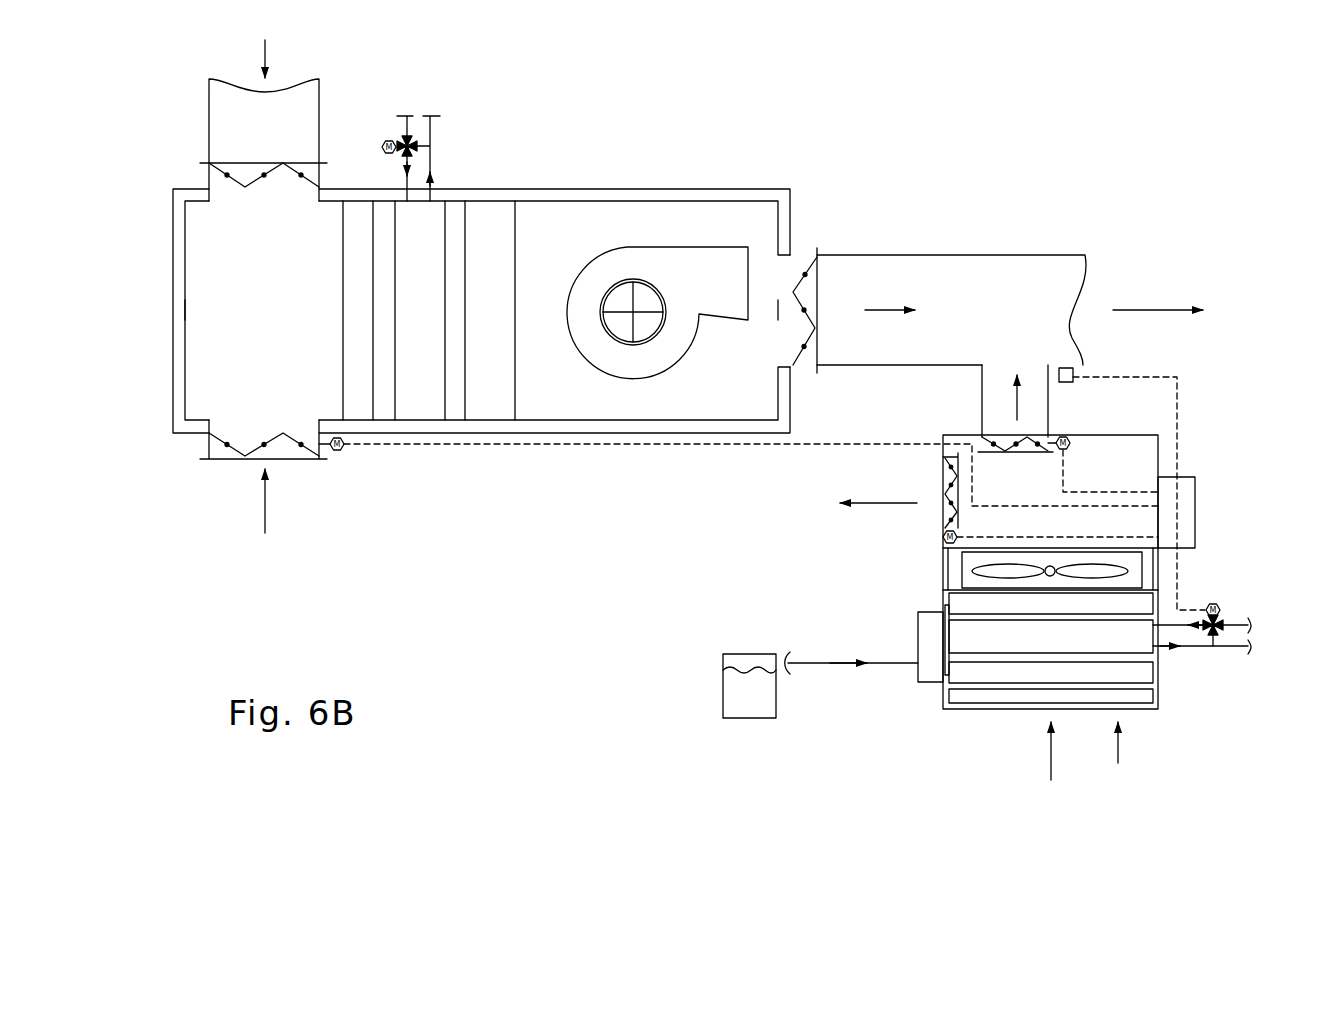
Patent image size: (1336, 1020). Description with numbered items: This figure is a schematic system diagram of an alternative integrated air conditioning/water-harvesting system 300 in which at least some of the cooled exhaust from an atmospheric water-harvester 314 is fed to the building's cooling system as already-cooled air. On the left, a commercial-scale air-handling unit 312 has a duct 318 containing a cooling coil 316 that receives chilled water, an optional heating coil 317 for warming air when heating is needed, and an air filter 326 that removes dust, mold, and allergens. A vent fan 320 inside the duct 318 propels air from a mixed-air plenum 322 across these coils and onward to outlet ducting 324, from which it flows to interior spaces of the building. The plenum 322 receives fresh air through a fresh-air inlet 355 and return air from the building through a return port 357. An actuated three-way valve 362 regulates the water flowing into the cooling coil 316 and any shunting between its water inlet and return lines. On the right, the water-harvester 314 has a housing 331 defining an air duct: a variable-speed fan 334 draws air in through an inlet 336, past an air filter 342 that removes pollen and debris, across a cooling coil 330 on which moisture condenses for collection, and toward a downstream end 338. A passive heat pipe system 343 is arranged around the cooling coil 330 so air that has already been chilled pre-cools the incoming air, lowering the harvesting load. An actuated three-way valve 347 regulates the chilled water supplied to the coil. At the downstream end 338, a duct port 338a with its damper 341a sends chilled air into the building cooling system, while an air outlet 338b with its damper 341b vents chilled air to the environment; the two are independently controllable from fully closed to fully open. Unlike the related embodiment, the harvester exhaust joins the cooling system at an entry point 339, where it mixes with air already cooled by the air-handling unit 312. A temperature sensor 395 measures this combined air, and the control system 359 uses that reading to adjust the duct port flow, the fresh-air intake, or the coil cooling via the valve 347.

The integrated air conditioning/water-harvesting system 300 is at (897, 97).
The air-handling unit 312 is at (672, 92).
The atmospheric water-harvester 314 is at (928, 733).
The cooling coil 316 is at (437, 201).
The heating coil 317 is at (493, 200).
The duct 318 is at (580, 244).
The vent fan 320 is at (662, 247).
The mixed-air plenum 322 is at (281, 321).
The outlet ducting 324 is at (1118, 272).
The air filter 326 is at (359, 421).
The cooling coil 330 is at (948, 623).
The housing 331 is at (1160, 652).
The variable-speed fan 334 is at (960, 555).
The inlet 336 is at (1118, 763).
The downstream end 338 is at (1198, 417).
The duct port 338a is at (1043, 437).
The air outlet 338b is at (943, 472).
The entry point 339 is at (1025, 365).
The damper 341a is at (1046, 452).
The damper 341b is at (943, 514).
The air filter 342 is at (1002, 705).
The heat pipe system 343 is at (1154, 597).
The actuated three-way valve 347 is at (1221, 607).
The fresh-air inlet 355 is at (230, 468).
The return port 357 is at (208, 190).
The atmospheric water-harvester control system 359 is at (1195, 510).
The actuated three-way valve 362 is at (386, 141).
The temperature sensor 395 is at (1080, 367).